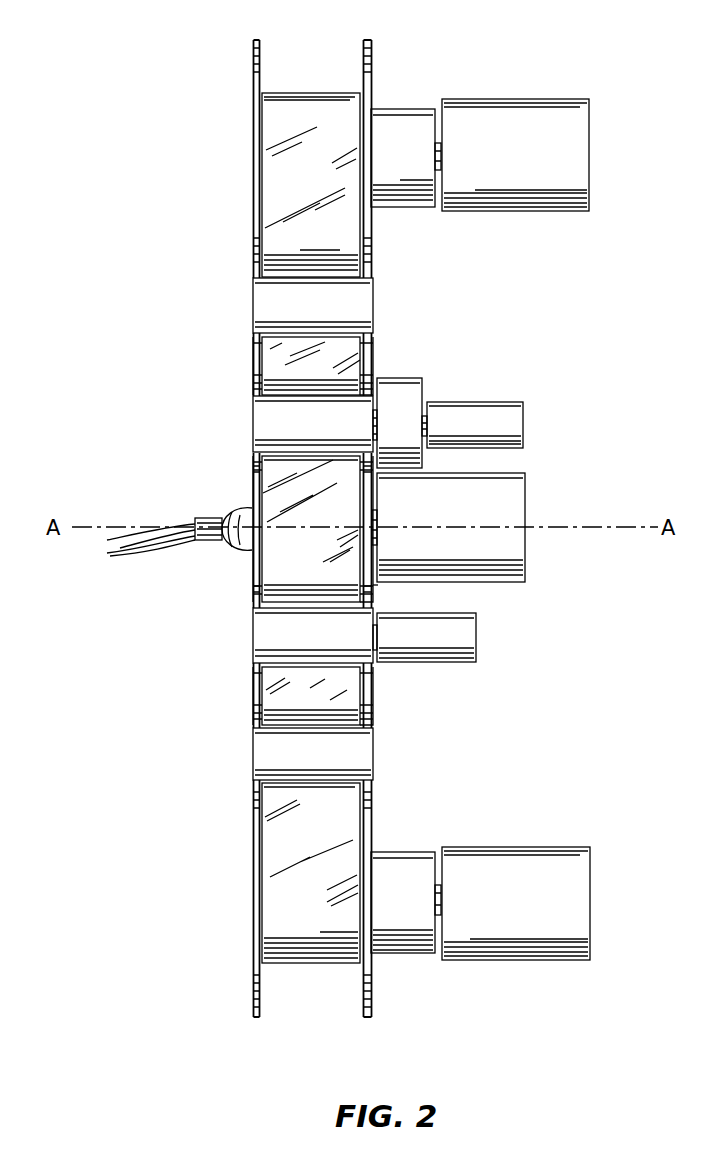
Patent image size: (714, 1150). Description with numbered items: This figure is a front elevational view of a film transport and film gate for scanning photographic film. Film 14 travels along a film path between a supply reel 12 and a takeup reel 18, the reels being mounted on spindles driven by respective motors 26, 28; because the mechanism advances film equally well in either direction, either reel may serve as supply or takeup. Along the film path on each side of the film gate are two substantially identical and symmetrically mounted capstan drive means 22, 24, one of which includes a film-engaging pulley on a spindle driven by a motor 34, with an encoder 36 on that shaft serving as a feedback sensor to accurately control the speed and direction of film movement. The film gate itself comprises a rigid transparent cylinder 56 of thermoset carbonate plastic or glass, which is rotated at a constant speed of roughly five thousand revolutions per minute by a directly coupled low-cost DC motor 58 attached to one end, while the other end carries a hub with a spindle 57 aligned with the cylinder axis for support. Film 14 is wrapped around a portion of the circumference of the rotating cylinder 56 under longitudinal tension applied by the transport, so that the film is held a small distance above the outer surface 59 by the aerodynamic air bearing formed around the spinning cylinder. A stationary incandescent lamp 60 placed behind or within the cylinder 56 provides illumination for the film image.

The supply reel 12 is at (384, 72).
The film 14 is at (311, 107).
The takeup reel 18 is at (253, 922).
The capstan drive means 22 is at (253, 430).
The capstan drive means 24 is at (262, 635).
The motor 26 is at (531, 120).
The motor 28 is at (506, 862).
The motor 34 is at (523, 411).
The encoder 36 is at (396, 394).
The transparent cylinder 56 is at (374, 586).
The spindle 57 is at (377, 532).
The DC motor 58 is at (525, 488).
The outer surface 59 is at (255, 490).
The incandescent lamp 60 is at (233, 547).